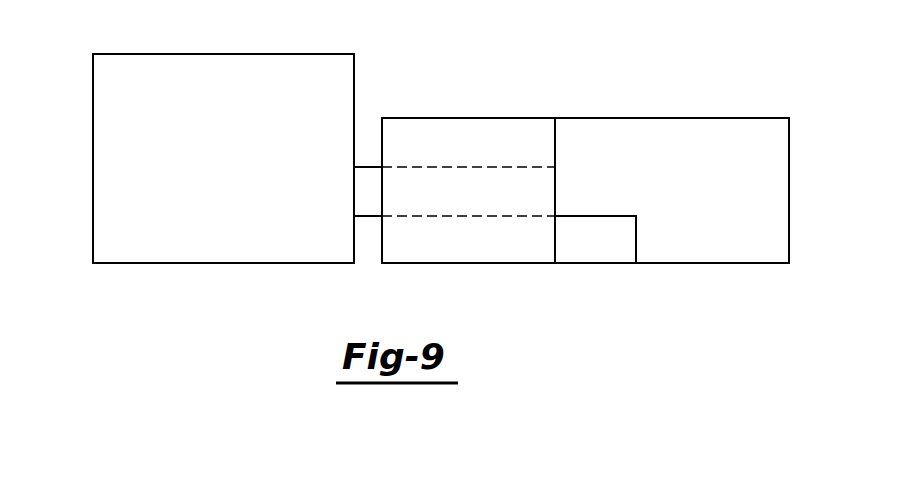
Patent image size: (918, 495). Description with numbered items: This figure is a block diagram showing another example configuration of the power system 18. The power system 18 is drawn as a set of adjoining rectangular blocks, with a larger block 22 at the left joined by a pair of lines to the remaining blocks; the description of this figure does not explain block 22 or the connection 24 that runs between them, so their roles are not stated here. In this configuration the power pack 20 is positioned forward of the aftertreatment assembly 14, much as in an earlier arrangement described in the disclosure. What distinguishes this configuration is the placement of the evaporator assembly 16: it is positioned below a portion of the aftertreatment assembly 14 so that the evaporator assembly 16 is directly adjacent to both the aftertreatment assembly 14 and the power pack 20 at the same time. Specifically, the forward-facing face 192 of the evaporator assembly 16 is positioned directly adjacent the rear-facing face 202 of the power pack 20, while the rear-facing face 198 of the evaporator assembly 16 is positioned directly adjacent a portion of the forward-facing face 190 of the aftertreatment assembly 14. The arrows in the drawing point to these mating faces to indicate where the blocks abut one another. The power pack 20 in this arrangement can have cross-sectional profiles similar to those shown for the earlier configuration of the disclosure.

The power system 18 is at (468, 70).
The controller 22 is at (118, 98).
The power pack 20 is at (400, 155).
The aftertreatment assembly 14 is at (578, 155).
The evaporator assembly 16 is at (581, 254).
The connection 24 is at (372, 208).
The forward-facing face 192 is at (553, 248).
The rear-facing face 202 is at (558, 222).
The forward-facing face 190 is at (634, 255).
The rear-facing face 198 is at (639, 237).